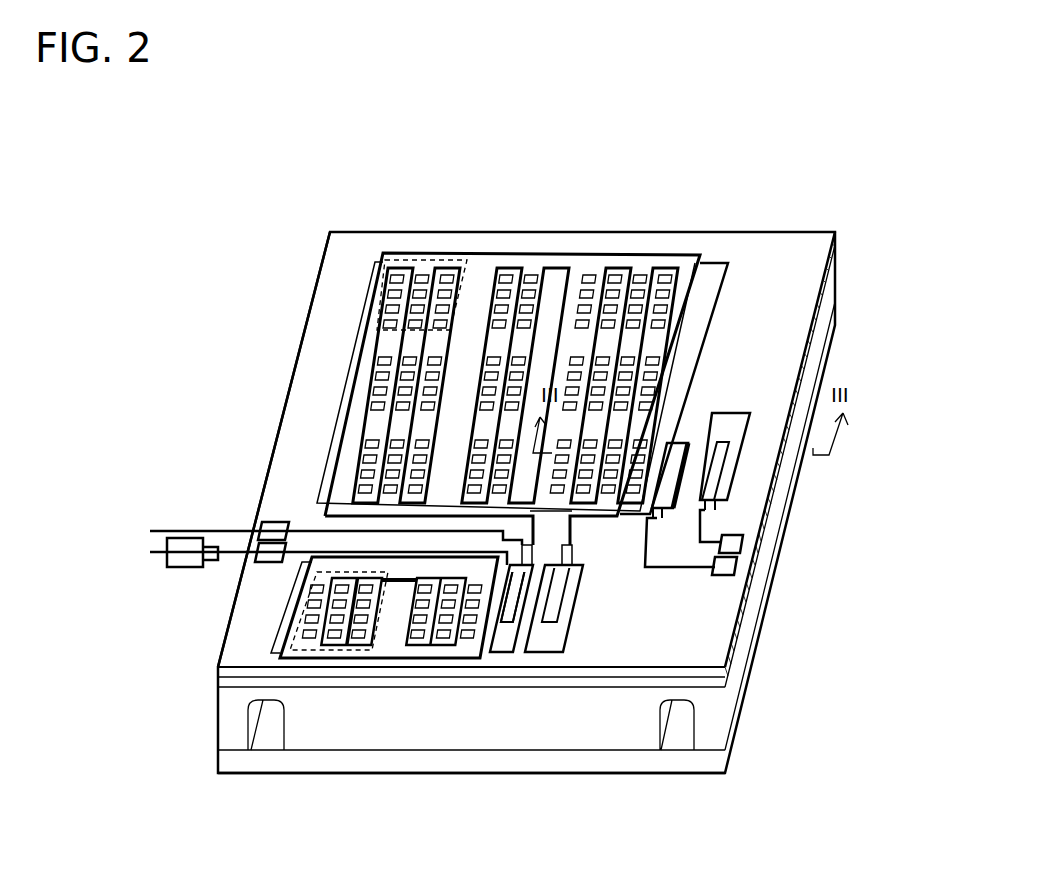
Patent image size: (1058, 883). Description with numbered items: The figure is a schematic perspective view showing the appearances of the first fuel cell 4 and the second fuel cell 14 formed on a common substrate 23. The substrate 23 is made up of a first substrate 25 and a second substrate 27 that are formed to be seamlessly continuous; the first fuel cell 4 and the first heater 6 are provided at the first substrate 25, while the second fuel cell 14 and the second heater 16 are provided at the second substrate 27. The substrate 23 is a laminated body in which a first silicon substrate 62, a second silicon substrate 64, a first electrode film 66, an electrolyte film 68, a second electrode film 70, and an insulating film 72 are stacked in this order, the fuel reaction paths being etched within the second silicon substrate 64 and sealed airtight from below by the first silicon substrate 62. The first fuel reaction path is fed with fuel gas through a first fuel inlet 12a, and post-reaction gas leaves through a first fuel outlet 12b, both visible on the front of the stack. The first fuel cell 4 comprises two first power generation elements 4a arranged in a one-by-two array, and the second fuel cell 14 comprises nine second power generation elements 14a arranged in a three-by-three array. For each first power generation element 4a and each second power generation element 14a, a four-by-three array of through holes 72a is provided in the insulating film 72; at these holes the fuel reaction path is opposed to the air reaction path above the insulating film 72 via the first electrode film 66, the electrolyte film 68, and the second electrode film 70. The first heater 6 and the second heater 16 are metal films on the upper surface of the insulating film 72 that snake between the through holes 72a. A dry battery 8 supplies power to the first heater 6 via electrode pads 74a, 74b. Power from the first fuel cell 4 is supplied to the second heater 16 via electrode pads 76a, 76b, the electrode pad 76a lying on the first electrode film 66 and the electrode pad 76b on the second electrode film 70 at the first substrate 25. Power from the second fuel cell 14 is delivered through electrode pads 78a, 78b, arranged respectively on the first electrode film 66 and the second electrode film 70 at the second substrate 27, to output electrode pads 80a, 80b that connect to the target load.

The substrate 23 is at (867, 204).
The second substrate 27 is at (282, 284).
The second fuel cell 14 is at (321, 336).
The second power generation element 14a is at (468, 262).
The through hole 72a is at (399, 275).
The second heater 16 is at (570, 277).
The insulating film 72 is at (598, 275).
The second electrode film 70 is at (713, 275).
The electrolyte film 68 is at (787, 277).
The electrode pad 74a is at (259, 531).
The electrode pad 74b is at (262, 547).
The battery 8 is at (180, 565).
The first fuel cell 4 is at (256, 613).
The first substrate 25 is at (198, 632).
The first power generation element 4a is at (343, 652).
The first heater 6 is at (455, 635).
The electrode pad 76a is at (560, 583).
The electrode pad 76b is at (510, 608).
The first electrode film 66 is at (733, 433).
The electrode pad 78a is at (712, 483).
The electrode pad 78b is at (660, 507).
The output electrode pad 80a is at (737, 543).
The output electrode pad 80b is at (732, 567).
The second silicon substrate 64 is at (710, 710).
The first silicon substrate 62 is at (710, 763).
The first fuel inlet 12a is at (268, 740).
The first fuel outlet 12b is at (676, 740).